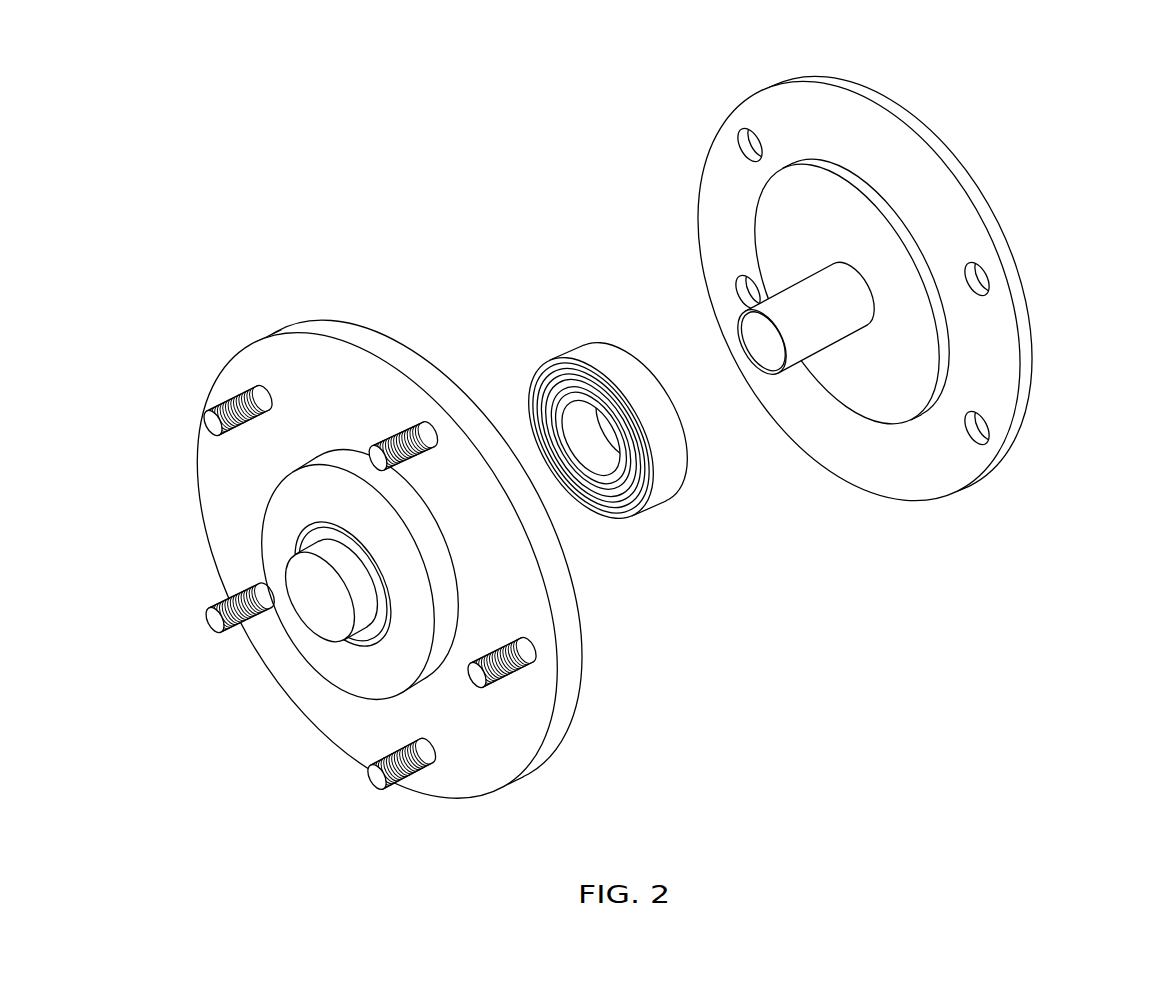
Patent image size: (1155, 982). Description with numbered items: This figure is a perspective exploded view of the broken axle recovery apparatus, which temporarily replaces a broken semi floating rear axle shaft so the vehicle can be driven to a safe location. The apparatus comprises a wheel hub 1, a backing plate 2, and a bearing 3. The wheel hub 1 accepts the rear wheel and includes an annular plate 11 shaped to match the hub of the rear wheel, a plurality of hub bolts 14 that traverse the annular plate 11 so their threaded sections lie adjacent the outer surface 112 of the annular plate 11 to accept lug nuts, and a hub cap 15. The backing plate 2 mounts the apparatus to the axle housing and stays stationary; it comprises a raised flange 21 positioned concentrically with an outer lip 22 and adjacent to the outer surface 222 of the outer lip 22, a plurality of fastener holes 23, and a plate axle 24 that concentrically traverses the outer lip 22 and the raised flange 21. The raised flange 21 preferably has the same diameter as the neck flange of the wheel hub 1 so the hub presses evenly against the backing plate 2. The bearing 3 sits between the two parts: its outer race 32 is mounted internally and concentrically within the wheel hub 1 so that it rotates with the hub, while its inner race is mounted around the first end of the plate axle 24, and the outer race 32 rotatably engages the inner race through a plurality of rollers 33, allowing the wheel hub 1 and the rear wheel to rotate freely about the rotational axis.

The wheel hub 1 is at (390, 559).
The annular plate 11 is at (390, 559).
The outer surface 112 is at (347, 411).
The hub bolts 14 is at (219, 423).
The hub cap 15 is at (317, 548).
The backing plate 2 is at (873, 288).
The raised flange 21 is at (883, 193).
The outer lip 22 is at (1023, 320).
The outer surface 222 is at (853, 144).
The fastener holes 23 is at (750, 146).
The plate axle 24 is at (845, 320).
The bearing 3 is at (619, 448).
The outer race 32 is at (575, 346).
The rollers 33 is at (618, 505).